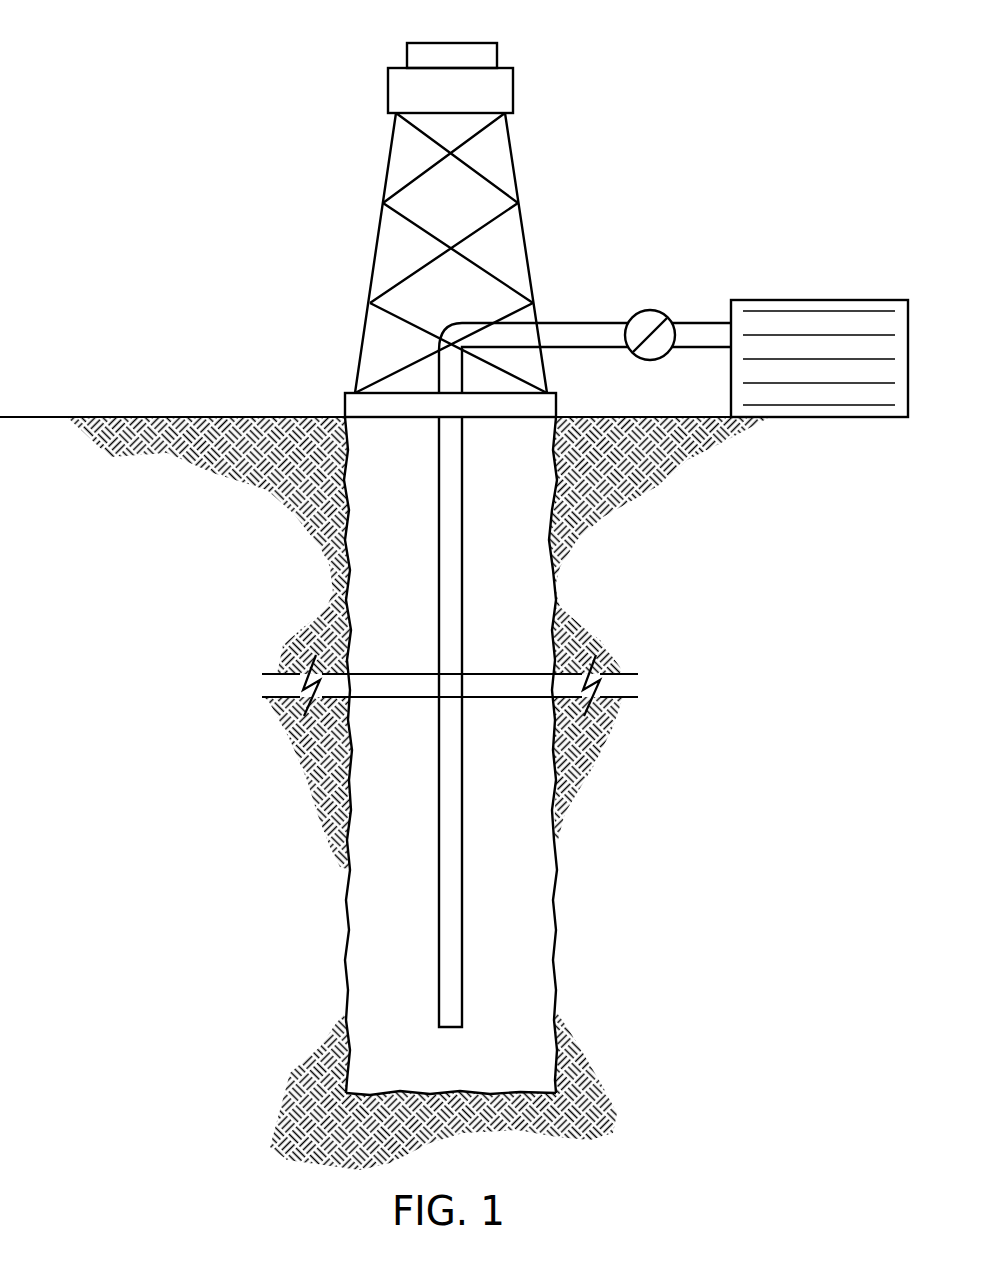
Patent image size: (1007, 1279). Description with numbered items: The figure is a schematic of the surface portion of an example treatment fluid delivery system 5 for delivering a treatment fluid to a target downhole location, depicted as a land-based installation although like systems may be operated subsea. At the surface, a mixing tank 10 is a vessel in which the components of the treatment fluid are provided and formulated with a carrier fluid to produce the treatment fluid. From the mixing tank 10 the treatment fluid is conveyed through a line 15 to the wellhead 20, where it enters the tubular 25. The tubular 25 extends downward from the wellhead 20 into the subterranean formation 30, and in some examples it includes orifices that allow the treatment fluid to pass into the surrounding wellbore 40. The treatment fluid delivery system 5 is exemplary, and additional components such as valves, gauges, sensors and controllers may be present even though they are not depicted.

The treatment fluid delivery system 5 is at (318, 50).
The mixing tank 10 is at (818, 300).
The line 15 is at (580, 323).
The wellhead 20 is at (345, 403).
The tubular 25 is at (453, 543).
The subterranean formation 30 is at (650, 310).
The wellbore 40 is at (344, 951).